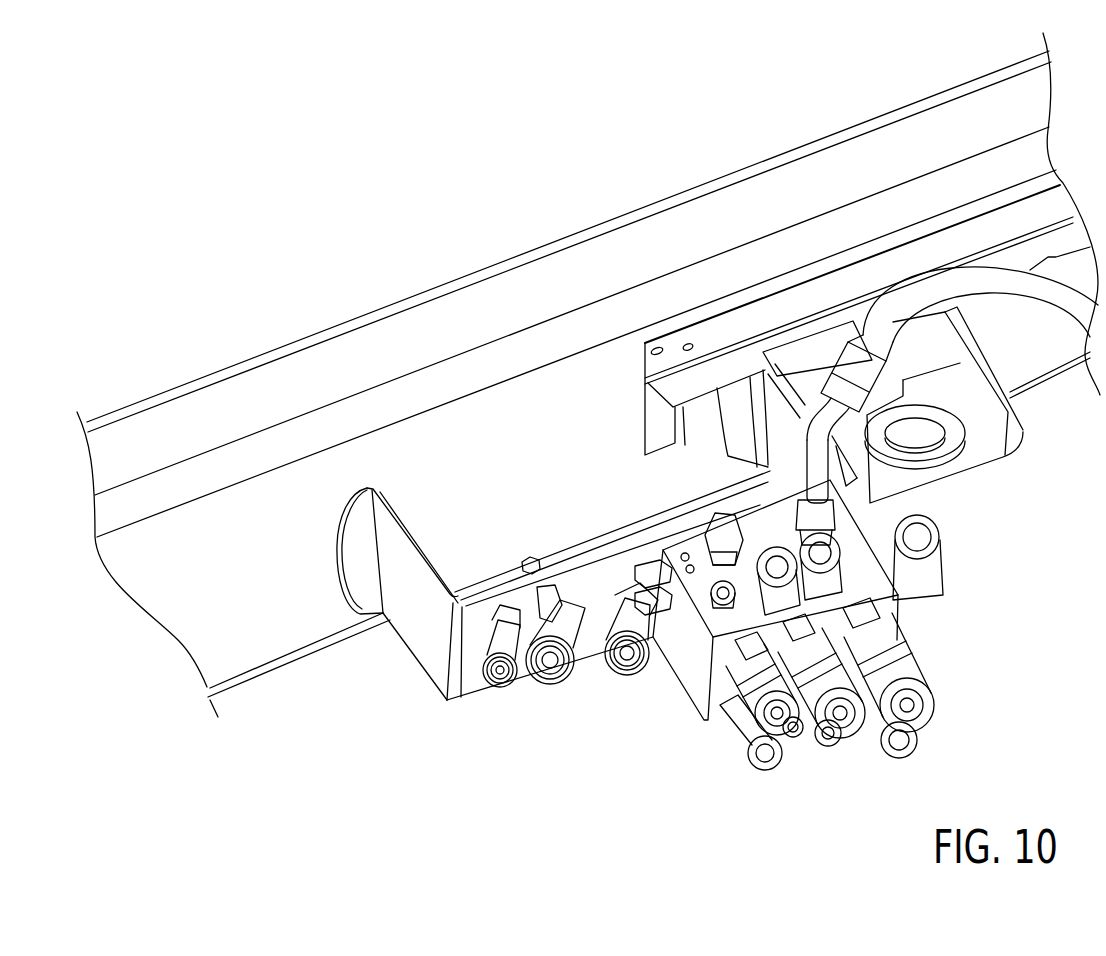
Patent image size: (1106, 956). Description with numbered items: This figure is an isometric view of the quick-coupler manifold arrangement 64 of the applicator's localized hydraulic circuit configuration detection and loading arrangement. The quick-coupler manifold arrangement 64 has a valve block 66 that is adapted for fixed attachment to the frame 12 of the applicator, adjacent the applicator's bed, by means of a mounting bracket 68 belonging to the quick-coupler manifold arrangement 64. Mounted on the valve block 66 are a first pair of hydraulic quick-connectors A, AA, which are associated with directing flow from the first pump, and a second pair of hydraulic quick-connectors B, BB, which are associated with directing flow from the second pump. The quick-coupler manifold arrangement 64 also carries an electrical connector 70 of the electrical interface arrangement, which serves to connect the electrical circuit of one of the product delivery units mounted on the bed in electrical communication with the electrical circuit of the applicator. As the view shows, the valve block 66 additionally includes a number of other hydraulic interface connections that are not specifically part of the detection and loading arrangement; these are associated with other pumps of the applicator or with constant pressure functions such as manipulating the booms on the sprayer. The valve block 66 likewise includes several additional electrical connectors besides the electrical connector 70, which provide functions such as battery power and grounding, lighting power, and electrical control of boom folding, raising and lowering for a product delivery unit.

The frame 12 is at (243, 663).
The quick-coupler manifold arrangement 64 is at (432, 734).
The valve block 66 is at (700, 727).
The mounting bracket 68 is at (427, 653).
The electrical connector 70 is at (587, 657).
The hydraulic quick-connector A is at (917, 744).
The hydraulic quick-connector AA is at (923, 712).
The hydraulic quick-connector B is at (837, 740).
The hydraulic quick-connector BB is at (853, 720).